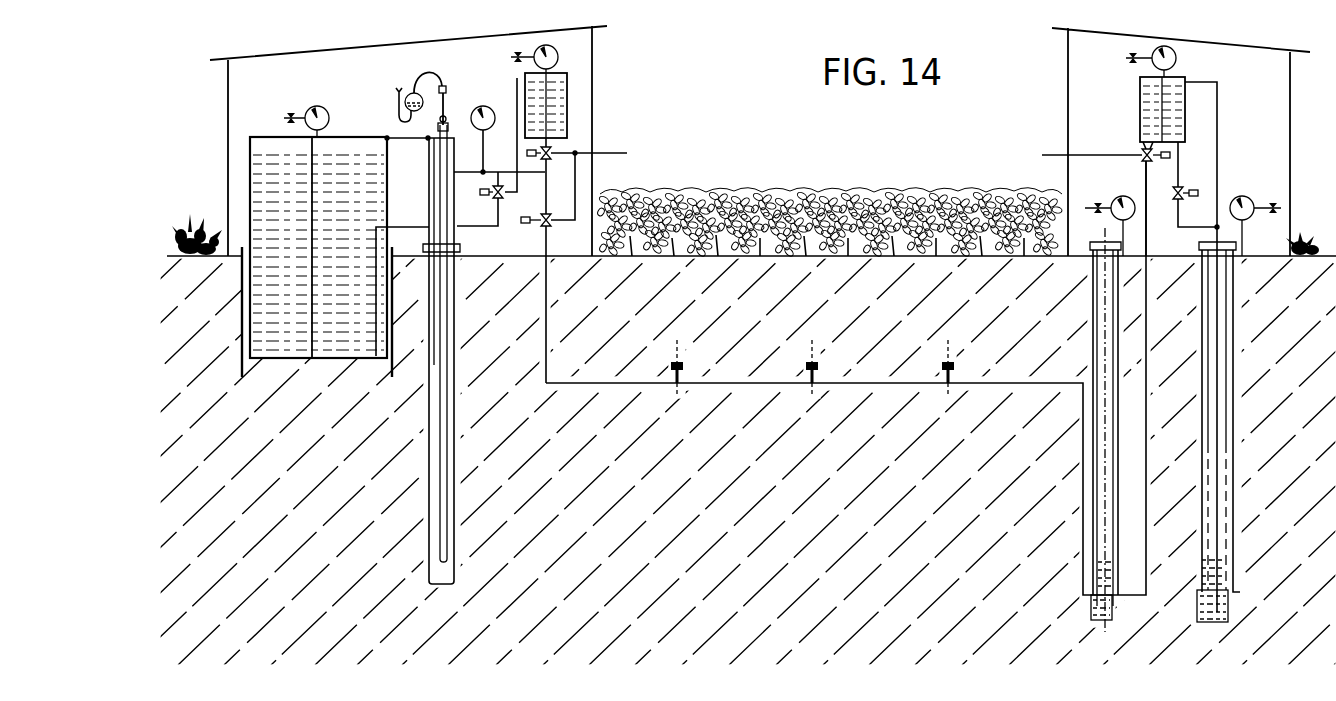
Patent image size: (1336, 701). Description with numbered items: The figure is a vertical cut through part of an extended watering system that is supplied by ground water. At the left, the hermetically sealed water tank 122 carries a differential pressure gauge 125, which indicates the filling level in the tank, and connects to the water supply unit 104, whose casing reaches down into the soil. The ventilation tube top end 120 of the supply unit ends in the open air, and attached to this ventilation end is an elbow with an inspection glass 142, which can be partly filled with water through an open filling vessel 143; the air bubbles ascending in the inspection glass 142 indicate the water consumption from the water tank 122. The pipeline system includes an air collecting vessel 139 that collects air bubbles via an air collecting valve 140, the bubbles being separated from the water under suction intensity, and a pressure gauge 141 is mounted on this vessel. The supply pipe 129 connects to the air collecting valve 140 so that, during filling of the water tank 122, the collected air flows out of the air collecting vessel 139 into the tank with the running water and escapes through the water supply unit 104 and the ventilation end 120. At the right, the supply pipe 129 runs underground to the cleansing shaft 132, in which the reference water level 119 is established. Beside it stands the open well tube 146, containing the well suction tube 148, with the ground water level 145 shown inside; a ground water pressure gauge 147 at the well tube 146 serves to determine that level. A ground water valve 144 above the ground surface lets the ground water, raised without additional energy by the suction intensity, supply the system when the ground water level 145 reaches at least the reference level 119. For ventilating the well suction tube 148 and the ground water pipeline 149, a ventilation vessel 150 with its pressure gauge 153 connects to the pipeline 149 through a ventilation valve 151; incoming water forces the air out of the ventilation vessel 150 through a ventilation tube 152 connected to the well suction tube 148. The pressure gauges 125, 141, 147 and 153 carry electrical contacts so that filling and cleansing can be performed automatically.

The water supply unit 104 is at (446, 419).
The reference water level 119 is at (1098, 560).
The ventilation tube top end 120 is at (444, 108).
The water tank 122 is at (387, 205).
The differential pressure gauge 125 is at (317, 106).
The supply pipe 129 is at (627, 153).
The cleansing shaft 132 is at (1093, 327).
The air collecting vessel 139 is at (567, 105).
The air collecting valve 140 is at (553, 152).
The pressure gauge 141 is at (558, 57).
The inspection glass 142 is at (413, 88).
The open filling vessel 143 is at (392, 90).
The ground water valve 144 is at (1186, 191).
The ground water level 145 is at (1222, 560).
The open well tube 146 is at (1202, 362).
The ground water pressure gauge 147 is at (1242, 196).
The well suction tube 148 is at (1220, 440).
The ground water pipeline 149 is at (1146, 430).
The ventilation vessel 150 is at (1140, 100).
The ventilation valve 151 is at (1141, 151).
The ventilation tube 152 is at (1218, 122).
The pressure gauge 153 is at (1176, 54).